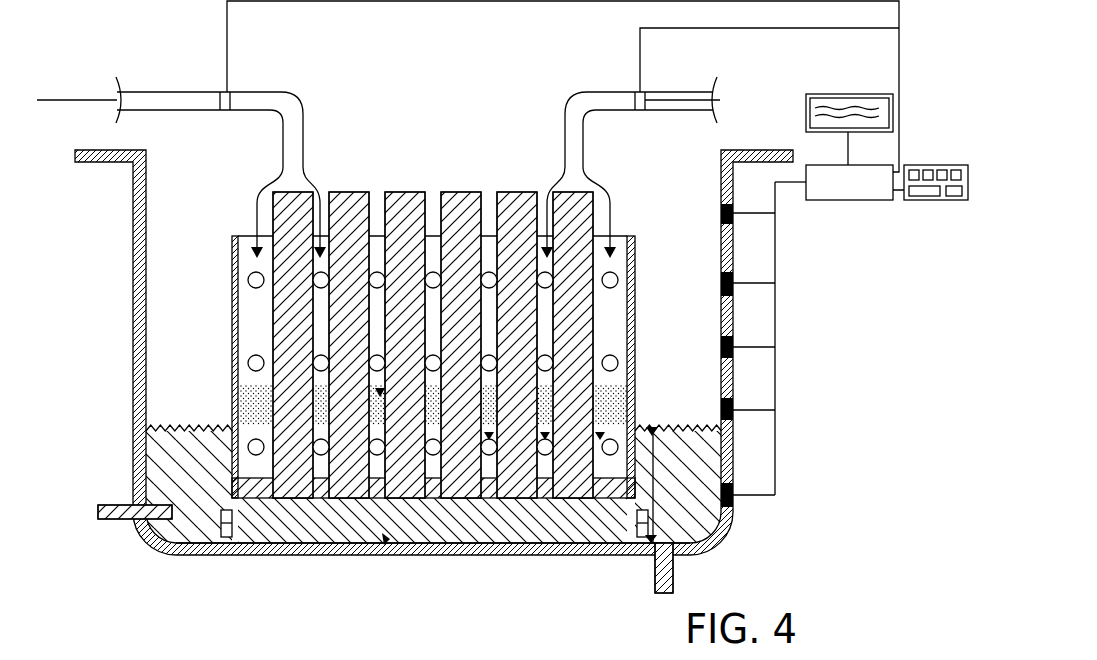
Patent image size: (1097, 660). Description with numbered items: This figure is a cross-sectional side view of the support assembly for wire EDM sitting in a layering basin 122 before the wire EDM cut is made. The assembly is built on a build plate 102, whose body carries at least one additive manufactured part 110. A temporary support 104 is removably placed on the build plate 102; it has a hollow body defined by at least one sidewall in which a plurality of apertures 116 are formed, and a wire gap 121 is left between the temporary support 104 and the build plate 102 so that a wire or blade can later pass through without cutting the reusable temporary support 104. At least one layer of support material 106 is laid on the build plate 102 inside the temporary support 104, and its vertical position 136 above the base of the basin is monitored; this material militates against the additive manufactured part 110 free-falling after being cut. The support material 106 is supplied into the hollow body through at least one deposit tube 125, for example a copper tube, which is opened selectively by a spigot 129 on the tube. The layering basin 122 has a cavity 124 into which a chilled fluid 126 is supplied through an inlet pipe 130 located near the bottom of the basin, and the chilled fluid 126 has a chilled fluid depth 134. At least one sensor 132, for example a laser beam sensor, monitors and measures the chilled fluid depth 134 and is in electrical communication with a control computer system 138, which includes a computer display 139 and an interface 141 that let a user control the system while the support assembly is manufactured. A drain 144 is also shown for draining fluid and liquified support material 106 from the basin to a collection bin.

The build plate 102 is at (262, 492).
The temporary support 104 is at (636, 264).
The support material 106 is at (252, 390).
The additive manufactured part 110 is at (428, 192).
The apertures 116 is at (232, 280).
The wire gap 121 is at (300, 472).
The layering basin 122 is at (143, 68).
The cavity 124 is at (382, 85).
The deposit tube 125 is at (689, 92).
The chilled fluid 126 is at (688, 427).
The spigot 129 is at (225, 92).
The inlet pipe 130 is at (98, 520).
The sensor 132 is at (738, 503).
The chilled fluid depth 134 is at (656, 480).
The vertical position 136 is at (386, 540).
The control computer system 138 is at (851, 201).
The computer display 139 is at (846, 94).
The interface 141 is at (937, 201).
The drain 144 is at (674, 572).